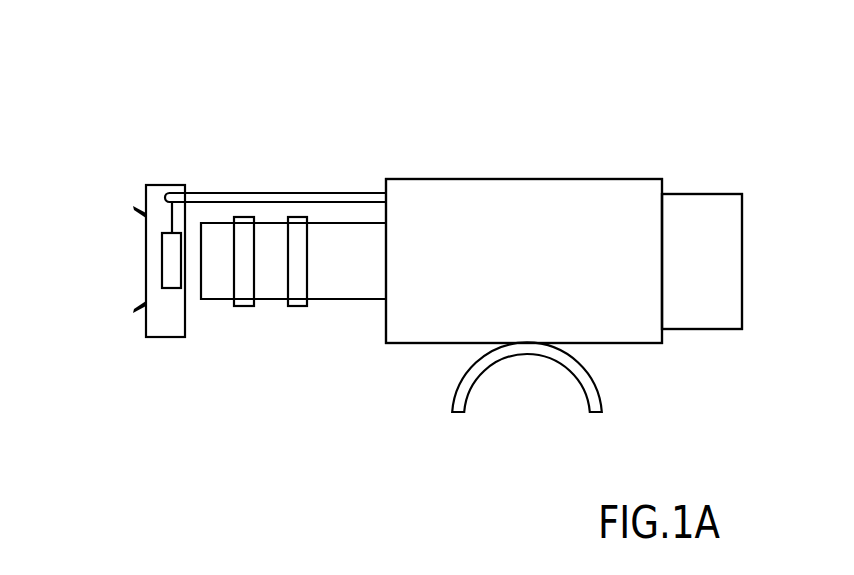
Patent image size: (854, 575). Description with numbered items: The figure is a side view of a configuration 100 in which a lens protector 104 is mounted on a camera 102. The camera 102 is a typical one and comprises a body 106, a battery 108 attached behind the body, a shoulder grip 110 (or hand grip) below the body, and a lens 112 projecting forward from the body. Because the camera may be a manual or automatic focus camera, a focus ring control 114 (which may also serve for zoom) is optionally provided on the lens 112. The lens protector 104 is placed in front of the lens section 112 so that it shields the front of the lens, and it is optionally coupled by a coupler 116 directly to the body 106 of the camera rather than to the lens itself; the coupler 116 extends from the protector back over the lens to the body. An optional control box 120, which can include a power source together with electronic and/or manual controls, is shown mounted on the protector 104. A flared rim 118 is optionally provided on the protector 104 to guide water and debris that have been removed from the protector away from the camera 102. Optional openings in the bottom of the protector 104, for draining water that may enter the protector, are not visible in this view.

The configuration 100 is at (522, 96).
The camera 102 is at (531, 175).
The lens protector 104 is at (164, 181).
The body 106 is at (533, 273).
The battery 108 is at (720, 273).
The shoulder grip 110 is at (482, 367).
The lens 112 is at (242, 325).
The focus ring control 114 is at (248, 308).
The coupler 116 is at (271, 194).
The flared rim 118 is at (143, 310).
The control box 120 is at (173, 280).